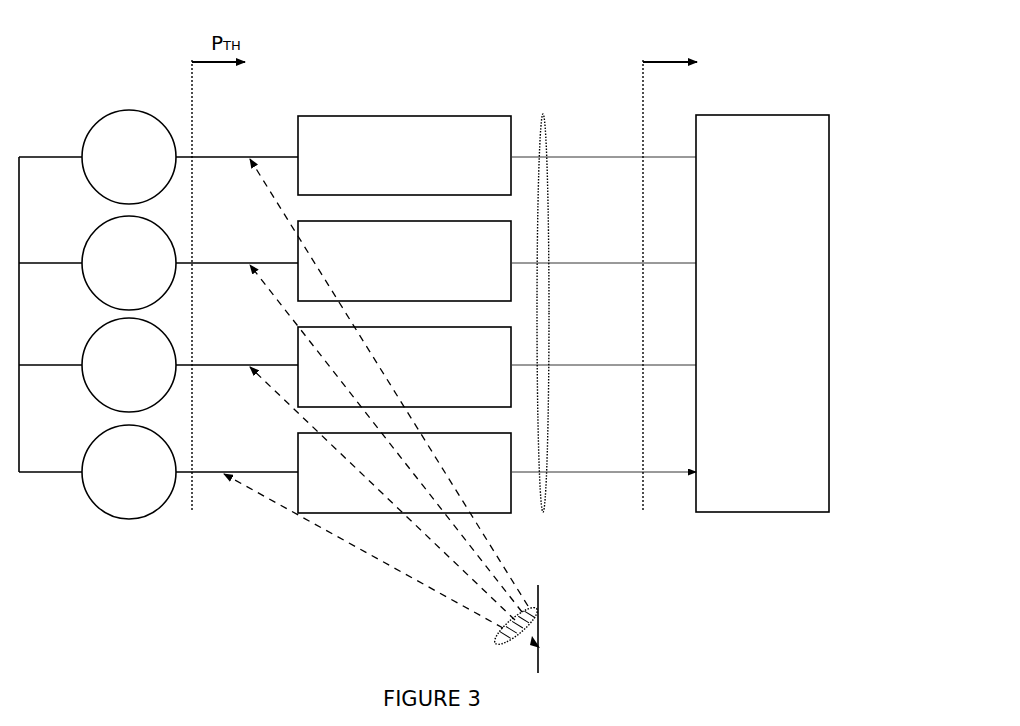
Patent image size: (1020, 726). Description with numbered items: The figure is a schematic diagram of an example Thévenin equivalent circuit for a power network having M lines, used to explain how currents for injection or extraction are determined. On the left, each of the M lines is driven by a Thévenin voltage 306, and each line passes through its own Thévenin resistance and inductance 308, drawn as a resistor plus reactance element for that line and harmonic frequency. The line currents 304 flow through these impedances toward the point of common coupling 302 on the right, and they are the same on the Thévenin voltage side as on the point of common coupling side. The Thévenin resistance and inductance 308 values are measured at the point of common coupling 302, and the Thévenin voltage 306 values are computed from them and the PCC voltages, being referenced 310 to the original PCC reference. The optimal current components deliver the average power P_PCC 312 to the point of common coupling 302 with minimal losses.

The point of common coupling 302 is at (762, 313).
The line currents 304 is at (545, 115).
The Thévenin voltage 306 is at (98, 122).
The Thévenin resistance and inductance 308 is at (425, 195).
The reference 310 is at (538, 655).
The P_PCC power 312 is at (700, 35).